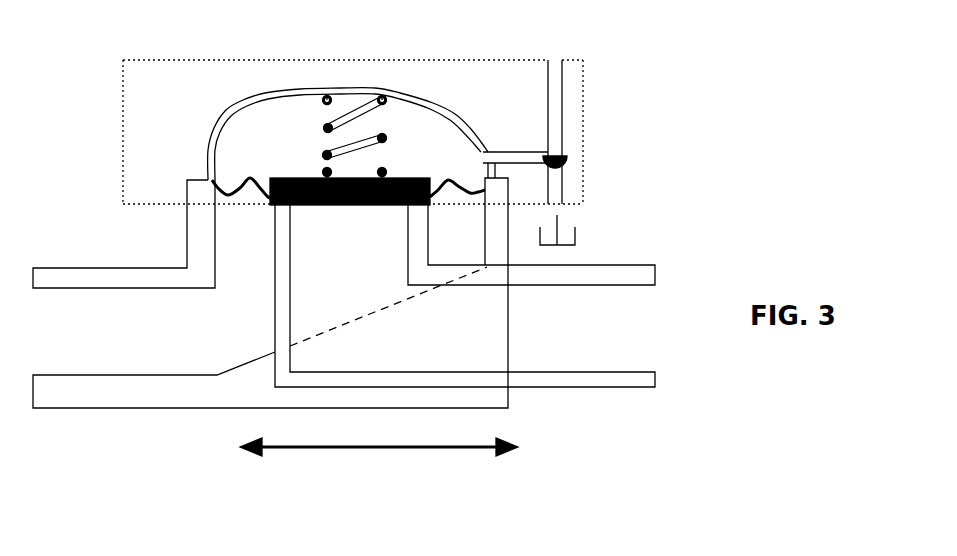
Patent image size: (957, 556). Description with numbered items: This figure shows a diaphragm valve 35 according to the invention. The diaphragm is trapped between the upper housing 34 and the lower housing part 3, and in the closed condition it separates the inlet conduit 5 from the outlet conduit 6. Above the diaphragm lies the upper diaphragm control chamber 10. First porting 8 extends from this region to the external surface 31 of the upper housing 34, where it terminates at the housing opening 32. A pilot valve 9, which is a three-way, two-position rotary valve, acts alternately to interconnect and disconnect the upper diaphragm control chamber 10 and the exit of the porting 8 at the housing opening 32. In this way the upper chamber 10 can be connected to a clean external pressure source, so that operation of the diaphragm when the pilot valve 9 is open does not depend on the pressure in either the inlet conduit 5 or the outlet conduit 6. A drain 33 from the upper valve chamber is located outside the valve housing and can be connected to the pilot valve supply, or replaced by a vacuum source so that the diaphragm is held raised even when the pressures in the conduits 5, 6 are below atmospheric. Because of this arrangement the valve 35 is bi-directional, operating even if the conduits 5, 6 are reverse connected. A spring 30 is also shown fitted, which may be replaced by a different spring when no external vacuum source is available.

The lower housing part 3 is at (237, 385).
The inlet conduit 5 is at (260, 277).
The outlet conduit 6 is at (602, 336).
The first porting 8 is at (518, 157).
The pilot valve 9 is at (568, 160).
The upper diaphragm control chamber 10 is at (288, 164).
The spring 30 is at (353, 110).
The external surface 31 is at (423, 60).
The housing opening 32 is at (555, 58).
The drain 33 is at (582, 232).
The upper housing 34 is at (205, 60).
The valve 35 is at (650, 68).